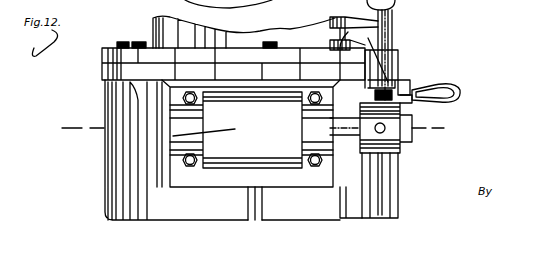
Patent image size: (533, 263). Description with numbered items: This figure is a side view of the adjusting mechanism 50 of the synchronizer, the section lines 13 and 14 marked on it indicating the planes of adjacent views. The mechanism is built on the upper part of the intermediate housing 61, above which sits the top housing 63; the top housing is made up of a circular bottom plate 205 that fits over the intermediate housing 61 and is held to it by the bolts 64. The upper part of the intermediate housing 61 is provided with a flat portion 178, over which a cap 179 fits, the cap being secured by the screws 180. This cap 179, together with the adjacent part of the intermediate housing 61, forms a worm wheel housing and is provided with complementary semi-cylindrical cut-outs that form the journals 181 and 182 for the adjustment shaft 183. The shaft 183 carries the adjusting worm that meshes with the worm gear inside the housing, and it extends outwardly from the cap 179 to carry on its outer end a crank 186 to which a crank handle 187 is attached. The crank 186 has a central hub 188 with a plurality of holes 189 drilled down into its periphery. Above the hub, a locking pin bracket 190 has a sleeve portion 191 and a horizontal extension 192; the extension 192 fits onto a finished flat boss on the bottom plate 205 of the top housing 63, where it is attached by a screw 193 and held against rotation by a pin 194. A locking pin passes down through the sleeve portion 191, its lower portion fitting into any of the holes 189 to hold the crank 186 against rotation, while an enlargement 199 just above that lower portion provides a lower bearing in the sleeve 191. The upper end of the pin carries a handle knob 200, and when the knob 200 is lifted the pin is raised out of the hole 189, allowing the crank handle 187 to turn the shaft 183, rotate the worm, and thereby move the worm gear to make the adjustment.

The section line 13- 13 is at (60, 130).
The section line 14- 14 is at (399, 166).
The assembly 50 is at (482, 54).
The intermediate housing 61 is at (137, 167).
The top housing 63 is at (172, 22).
The bolts 64 is at (137, 42).
The flat portion 178 is at (292, 183).
The cap 179 is at (233, 160).
The screws 180 is at (183, 98).
The journal 181 is at (173, 136).
The journal 182 is at (345, 140).
The adjustment shaft 183 is at (366, 162).
The crank 186 is at (412, 146).
The crank handle 187 is at (449, 86).
The central hub 188 is at (412, 108).
The holes 189 is at (376, 122).
The locking pin bracket 190 is at (392, 34).
The sleeve portion 191 is at (400, 58).
The horizontal extension 192 is at (348, 32).
The screw 193 is at (398, 44).
The pin 194 is at (325, 30).
The enlargement 199 is at (398, 94).
The handle knob 200 is at (396, 8).
The bottom plate 205 is at (103, 59).